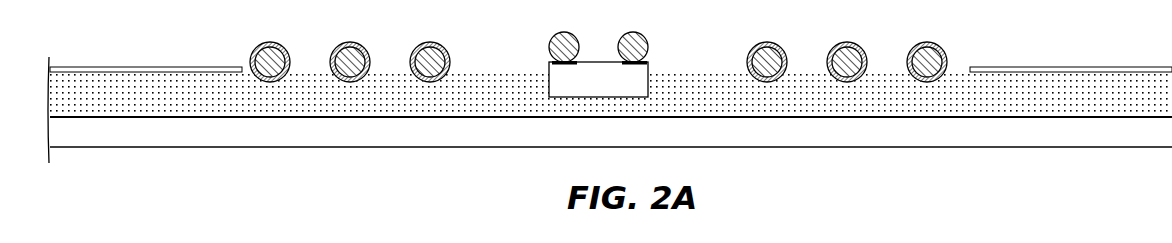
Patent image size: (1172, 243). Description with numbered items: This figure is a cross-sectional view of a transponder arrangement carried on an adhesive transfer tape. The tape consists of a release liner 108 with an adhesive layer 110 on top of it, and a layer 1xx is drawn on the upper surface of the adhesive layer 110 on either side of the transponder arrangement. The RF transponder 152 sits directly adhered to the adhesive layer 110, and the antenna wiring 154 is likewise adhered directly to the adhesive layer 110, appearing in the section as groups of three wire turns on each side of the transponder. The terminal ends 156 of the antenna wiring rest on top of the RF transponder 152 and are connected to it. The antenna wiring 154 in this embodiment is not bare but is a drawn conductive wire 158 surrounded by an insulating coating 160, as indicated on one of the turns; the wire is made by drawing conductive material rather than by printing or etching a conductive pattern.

The release liner 108 is at (507, 144).
The adhesive layer 110 is at (711, 104).
The conductive layer 1xx is at (146, 67).
The RF transponder 152 is at (617, 92).
The antenna wiring 154 is at (448, 36).
The terminal ends 156 is at (640, 32).
The wire 158 is at (354, 64).
The insulating coating 160 is at (449, 66).